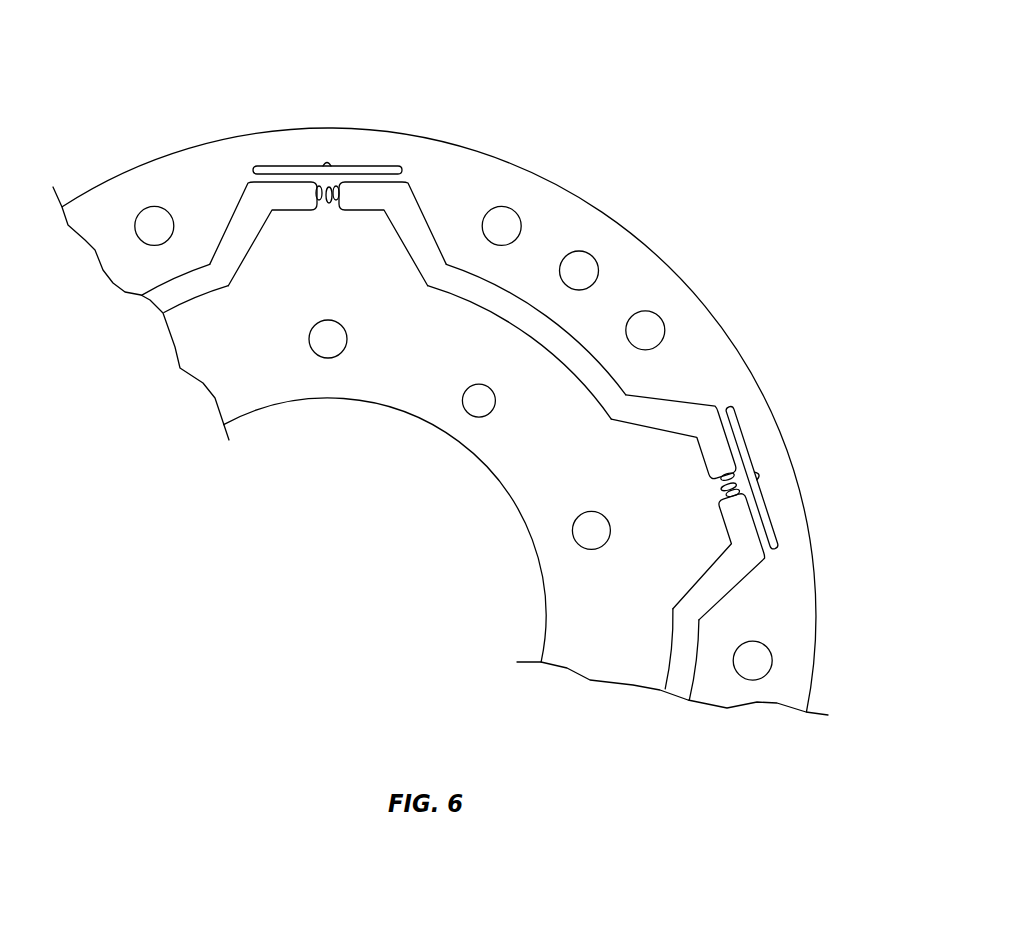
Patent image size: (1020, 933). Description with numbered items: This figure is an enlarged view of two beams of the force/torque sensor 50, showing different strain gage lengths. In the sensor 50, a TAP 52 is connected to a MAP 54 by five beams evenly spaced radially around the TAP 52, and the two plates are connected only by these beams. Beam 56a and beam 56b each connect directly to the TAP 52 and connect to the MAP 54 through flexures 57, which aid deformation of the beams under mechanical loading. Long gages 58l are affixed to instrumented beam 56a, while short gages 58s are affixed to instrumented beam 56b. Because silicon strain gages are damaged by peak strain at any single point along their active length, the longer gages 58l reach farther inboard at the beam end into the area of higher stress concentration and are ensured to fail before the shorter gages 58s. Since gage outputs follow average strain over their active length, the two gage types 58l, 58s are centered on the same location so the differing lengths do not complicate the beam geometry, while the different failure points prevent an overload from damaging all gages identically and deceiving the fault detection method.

The force/torque sensor 50 is at (632, 76).
The TAP 52 is at (528, 442).
The MAP 54 is at (640, 278).
The instrumented beam 56a is at (337, 188).
The instrumented beam 56b is at (735, 480).
The flexure 57 is at (355, 178).
The long gage 58l is at (308, 190).
The short gage 58s is at (712, 478).